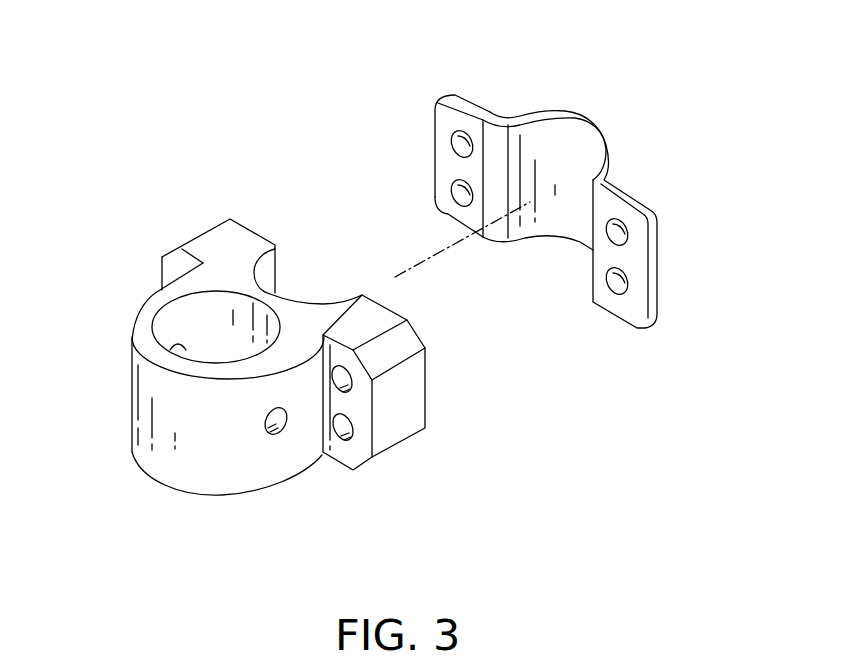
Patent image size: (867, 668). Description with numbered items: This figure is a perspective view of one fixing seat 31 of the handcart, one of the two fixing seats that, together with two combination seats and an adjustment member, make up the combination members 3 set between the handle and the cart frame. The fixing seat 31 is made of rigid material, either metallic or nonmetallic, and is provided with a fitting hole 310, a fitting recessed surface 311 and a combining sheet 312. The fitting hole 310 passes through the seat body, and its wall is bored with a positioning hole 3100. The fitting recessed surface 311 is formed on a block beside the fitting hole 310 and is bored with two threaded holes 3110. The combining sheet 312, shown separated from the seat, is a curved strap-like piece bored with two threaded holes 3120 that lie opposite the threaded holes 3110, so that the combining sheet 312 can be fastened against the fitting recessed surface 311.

The combination member 3 is at (280, 86).
The fixing seat 31 is at (405, 98).
The fitting hole 310 is at (192, 327).
The positioning hole 3100 is at (282, 428).
The fitting recessed surface 311 is at (303, 283).
The threaded holes 3110 is at (353, 427).
The combining sheet 312 is at (552, 107).
The threaded holes 3120 is at (607, 233).